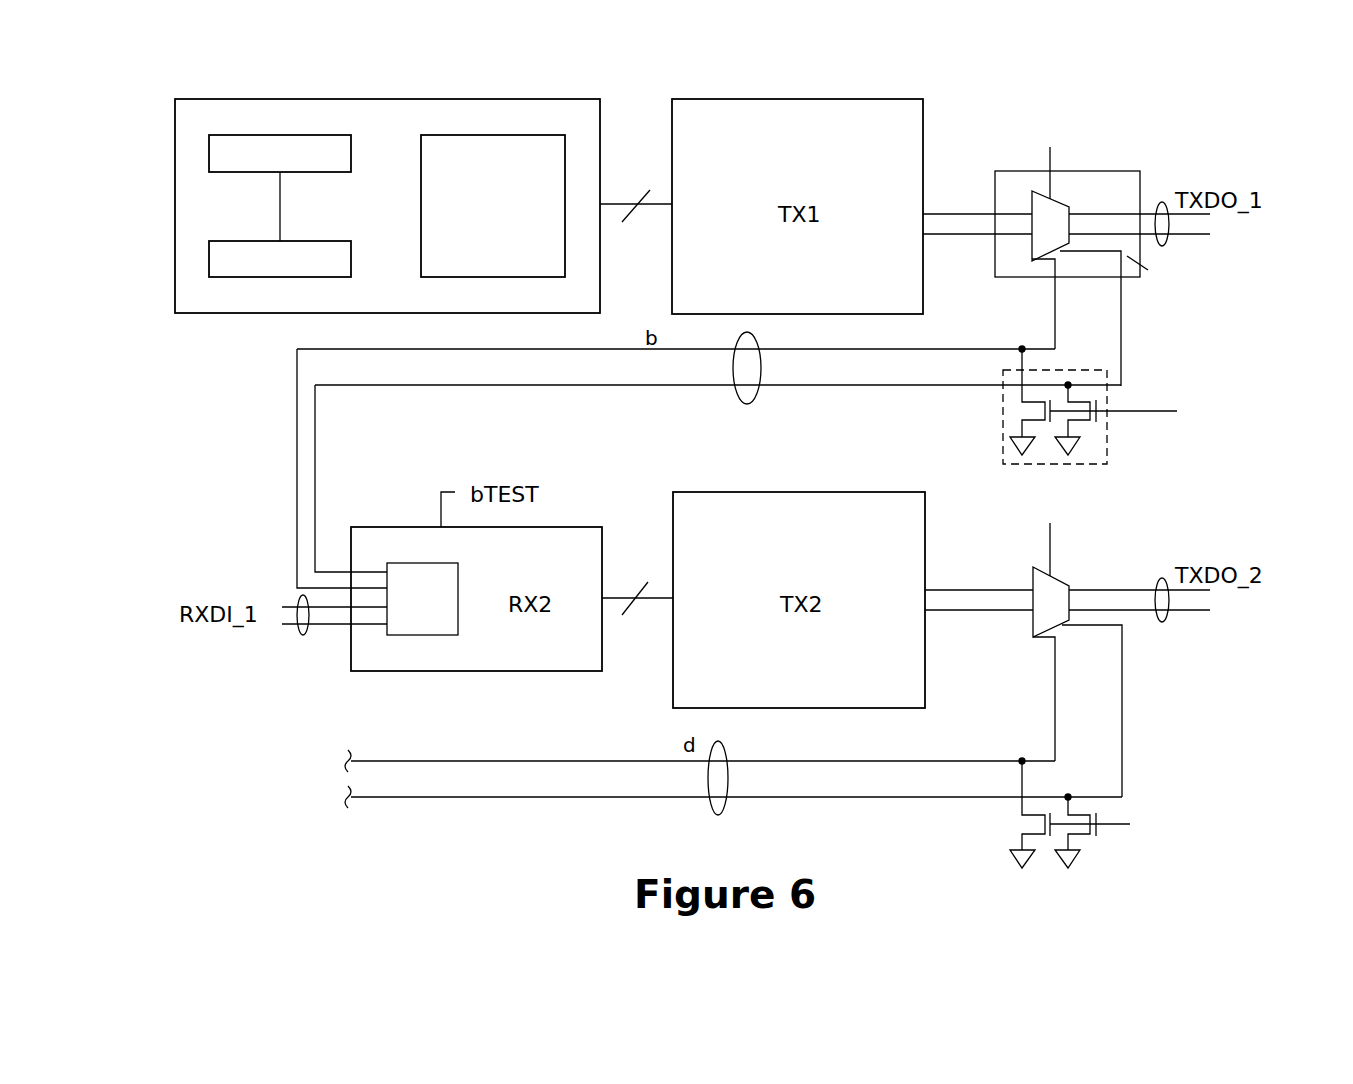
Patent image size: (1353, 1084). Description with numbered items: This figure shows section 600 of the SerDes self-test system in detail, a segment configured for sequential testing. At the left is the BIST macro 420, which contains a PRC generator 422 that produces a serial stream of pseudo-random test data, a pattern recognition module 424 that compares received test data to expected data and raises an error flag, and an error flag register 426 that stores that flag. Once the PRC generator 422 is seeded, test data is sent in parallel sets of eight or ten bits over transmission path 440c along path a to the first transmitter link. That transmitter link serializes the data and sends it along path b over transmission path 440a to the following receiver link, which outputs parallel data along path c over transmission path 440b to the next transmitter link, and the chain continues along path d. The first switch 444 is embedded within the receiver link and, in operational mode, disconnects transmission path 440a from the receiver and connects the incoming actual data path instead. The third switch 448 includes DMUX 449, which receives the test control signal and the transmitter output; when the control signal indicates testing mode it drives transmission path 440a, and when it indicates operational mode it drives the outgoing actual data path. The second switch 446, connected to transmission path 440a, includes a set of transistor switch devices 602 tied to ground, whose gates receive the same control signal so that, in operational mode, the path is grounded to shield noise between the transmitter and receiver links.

The section 600 is at (232, 66).
The BIST macro 420 is at (175, 132).
The PRC generator 422 is at (512, 217).
The pattern recognition module 424 is at (299, 271).
The error flag register 426 is at (299, 165).
The transmission path 440a is at (1117, 286).
The transmission path 440b is at (626, 597).
The transmission path 440c is at (624, 203).
The first switch 444 is at (487, 569).
The second switch 446 is at (1114, 459).
The third switch 448 is at (1105, 160).
The DMUX 449 is at (1031, 263).
The transistor switch devices 602 is at (1081, 395).